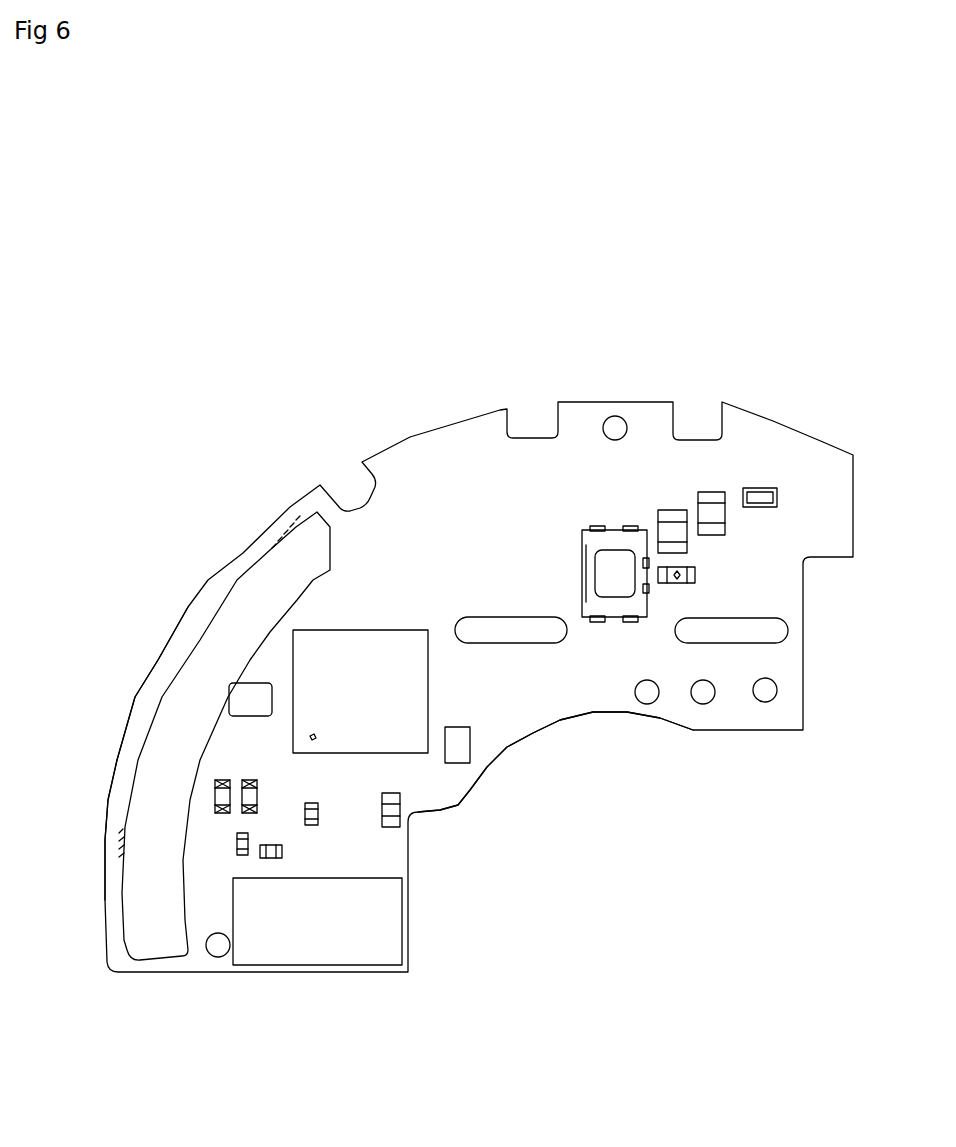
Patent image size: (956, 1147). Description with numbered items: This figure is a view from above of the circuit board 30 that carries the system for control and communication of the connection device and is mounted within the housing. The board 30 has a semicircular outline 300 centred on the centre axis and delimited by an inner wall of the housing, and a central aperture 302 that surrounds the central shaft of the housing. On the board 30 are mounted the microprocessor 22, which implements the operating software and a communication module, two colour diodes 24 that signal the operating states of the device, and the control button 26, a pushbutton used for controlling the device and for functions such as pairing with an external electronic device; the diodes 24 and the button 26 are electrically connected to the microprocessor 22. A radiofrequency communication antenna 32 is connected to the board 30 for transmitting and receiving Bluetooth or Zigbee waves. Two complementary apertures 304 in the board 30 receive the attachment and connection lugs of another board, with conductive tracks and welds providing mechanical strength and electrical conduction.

The circuit board 30 is at (450, 456).
The semicircular outline 300 is at (237, 551).
The radiofrequency communication antenna 32 is at (183, 697).
The complementary apertures 304 is at (498, 634).
The control button 26 is at (617, 565).
The microprocessor 22 is at (380, 730).
The central aperture 302 is at (560, 722).
The colour diodes 24 is at (215, 805).